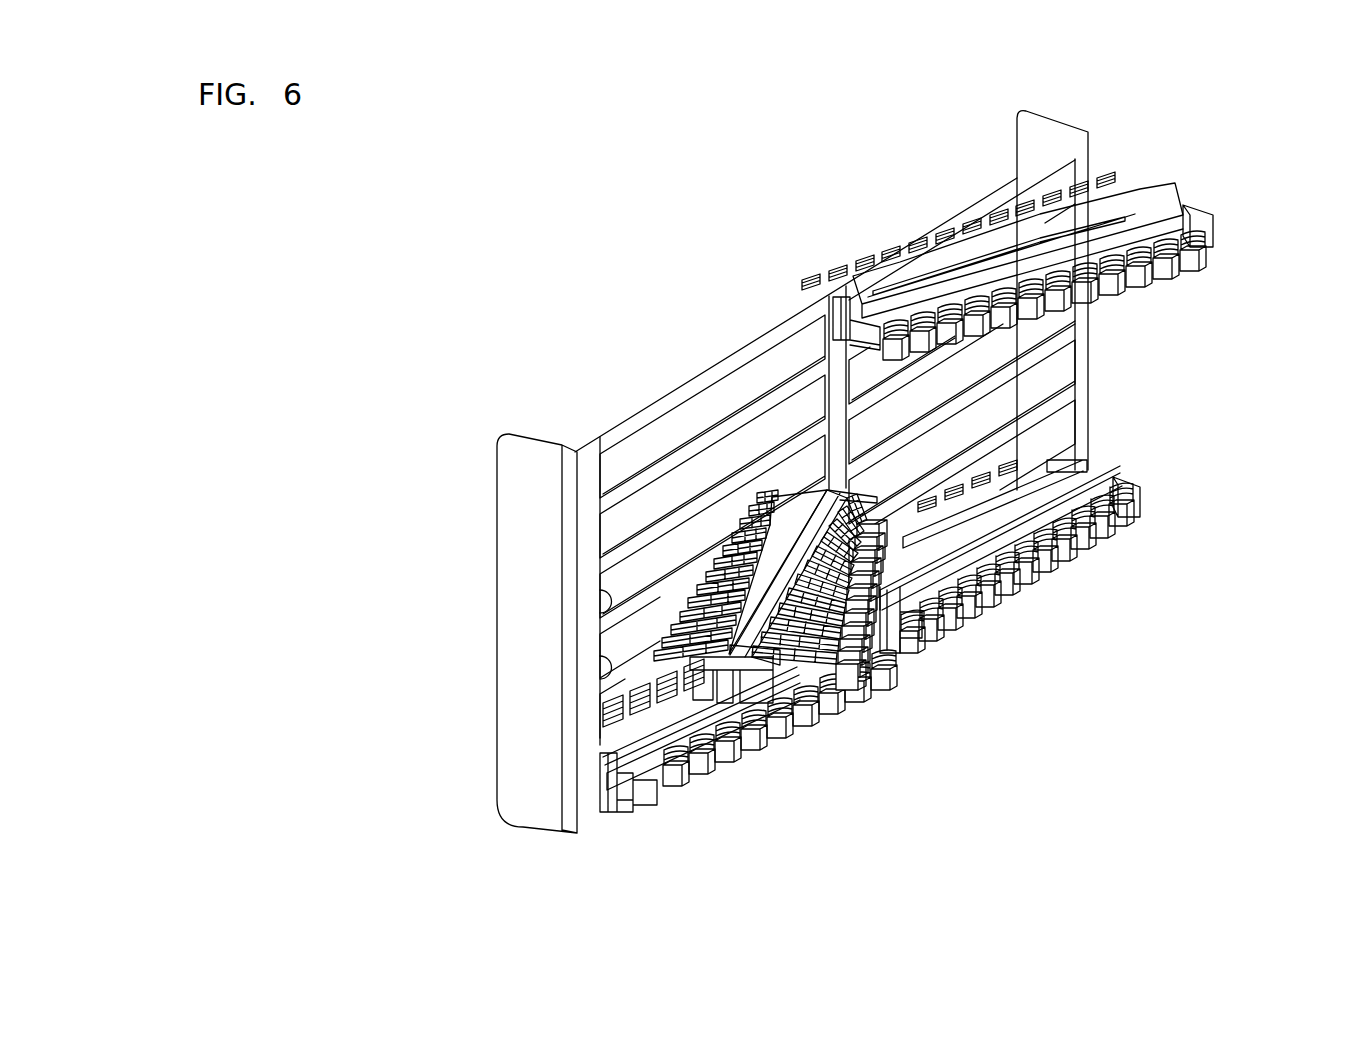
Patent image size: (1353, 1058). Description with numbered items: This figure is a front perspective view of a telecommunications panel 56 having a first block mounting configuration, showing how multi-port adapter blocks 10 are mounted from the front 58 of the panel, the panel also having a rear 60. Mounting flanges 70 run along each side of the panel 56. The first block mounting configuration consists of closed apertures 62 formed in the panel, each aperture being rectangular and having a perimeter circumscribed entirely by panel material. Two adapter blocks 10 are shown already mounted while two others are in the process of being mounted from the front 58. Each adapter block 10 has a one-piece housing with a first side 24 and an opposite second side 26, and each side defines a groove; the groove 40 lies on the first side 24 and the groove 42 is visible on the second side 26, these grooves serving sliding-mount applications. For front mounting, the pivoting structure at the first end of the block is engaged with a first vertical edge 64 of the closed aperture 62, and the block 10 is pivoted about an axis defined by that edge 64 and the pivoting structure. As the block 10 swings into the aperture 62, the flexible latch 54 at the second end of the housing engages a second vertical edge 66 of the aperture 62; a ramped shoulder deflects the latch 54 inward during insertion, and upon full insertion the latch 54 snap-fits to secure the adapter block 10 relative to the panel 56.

The multi-port adapter block 10 is at (928, 518).
The first side 24 is at (1004, 244).
The second side 26 is at (767, 582).
The groove 40 is at (1097, 232).
The groove 42 is at (778, 580).
The flexible latch 54 is at (1217, 236).
The telecommunications panel 56 is at (890, 247).
The front 58 is at (1200, 403).
The rear 60 is at (785, 439).
The closed aperture 62 is at (1048, 455).
The first vertical edge 64 is at (822, 395).
The second vertical edge 66 is at (610, 672).
The mounting flange 70 is at (1030, 122).